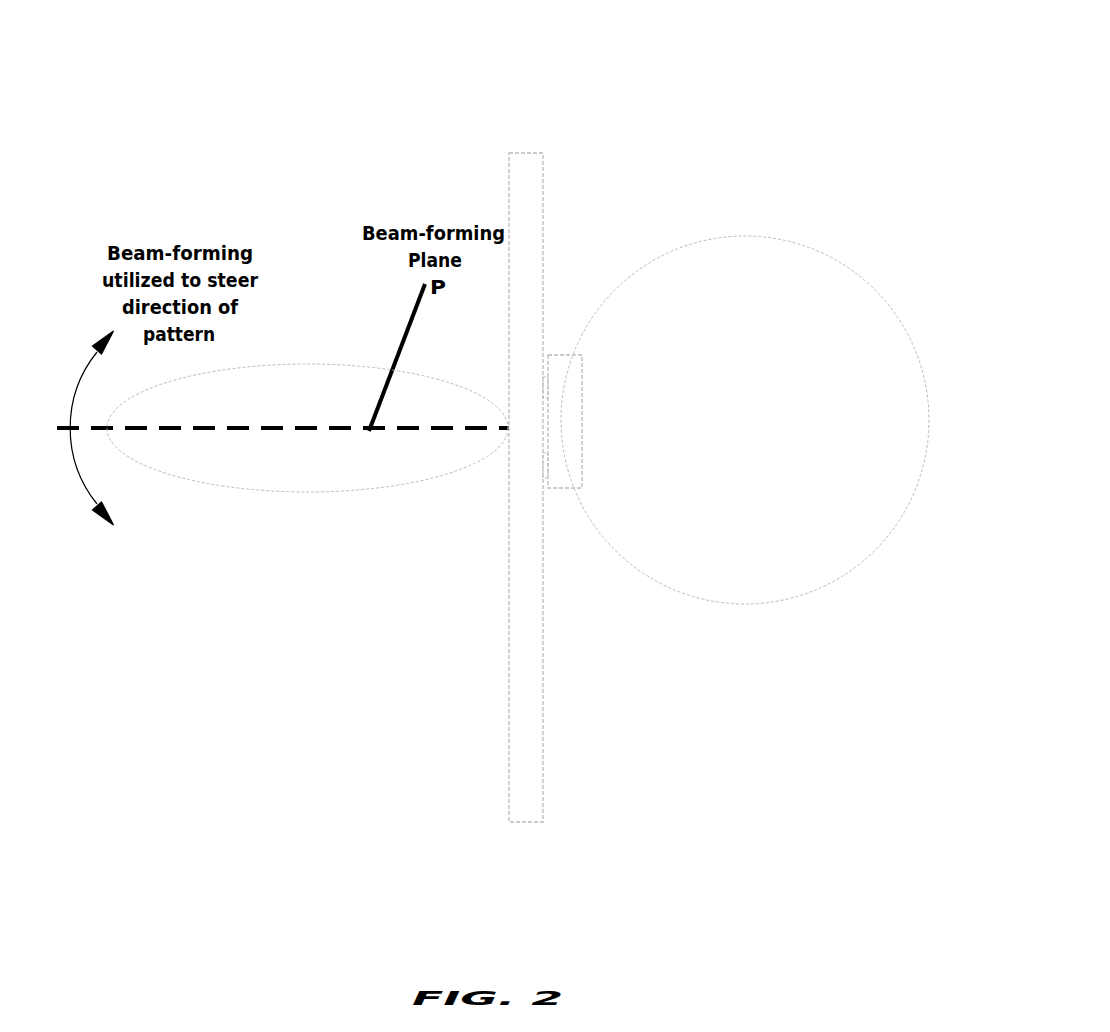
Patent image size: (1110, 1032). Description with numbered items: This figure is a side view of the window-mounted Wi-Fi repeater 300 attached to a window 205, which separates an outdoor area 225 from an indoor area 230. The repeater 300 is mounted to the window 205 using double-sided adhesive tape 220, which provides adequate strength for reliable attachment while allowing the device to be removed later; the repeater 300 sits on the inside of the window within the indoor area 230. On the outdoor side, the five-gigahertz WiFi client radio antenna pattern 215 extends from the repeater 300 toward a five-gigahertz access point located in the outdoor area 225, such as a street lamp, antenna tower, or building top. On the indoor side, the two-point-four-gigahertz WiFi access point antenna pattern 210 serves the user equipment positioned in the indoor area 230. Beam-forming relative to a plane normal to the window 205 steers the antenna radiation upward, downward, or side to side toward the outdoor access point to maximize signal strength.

The window 205 is at (536, 200).
The 2.4 GHz WiFi access point antenna pattern 210 is at (790, 233).
The 5 GHz WiFi client radio antenna pattern 215 is at (299, 361).
The double-sided adhesive tape 220 is at (546, 377).
The outdoor area 225 is at (342, 711).
The indoor area 230 is at (835, 711).
The window-mounted Wi-Fi repeater 300 is at (583, 453).